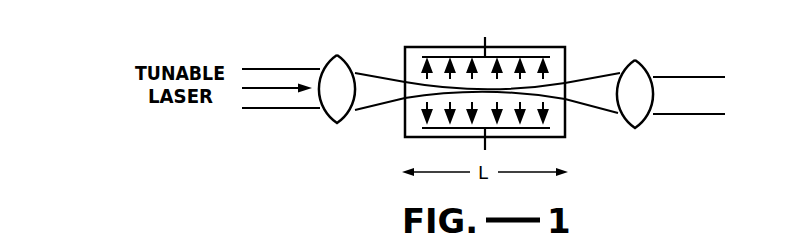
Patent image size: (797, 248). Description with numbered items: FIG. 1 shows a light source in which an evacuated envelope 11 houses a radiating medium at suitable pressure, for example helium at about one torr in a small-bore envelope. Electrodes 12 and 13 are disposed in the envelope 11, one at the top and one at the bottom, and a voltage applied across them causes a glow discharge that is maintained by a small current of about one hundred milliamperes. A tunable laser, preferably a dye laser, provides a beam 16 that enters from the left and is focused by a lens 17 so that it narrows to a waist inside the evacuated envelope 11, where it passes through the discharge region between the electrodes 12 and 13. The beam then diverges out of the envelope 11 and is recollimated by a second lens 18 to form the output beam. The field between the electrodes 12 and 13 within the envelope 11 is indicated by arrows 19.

The evacuated envelope 11 is at (530, 47).
The electrode 12 is at (456, 47).
The electrode 13 is at (442, 128).
The beam 16 is at (277, 108).
The lens 17 is at (334, 72).
The lens 18 is at (637, 72).
The electric field arrows 19 is at (553, 112).